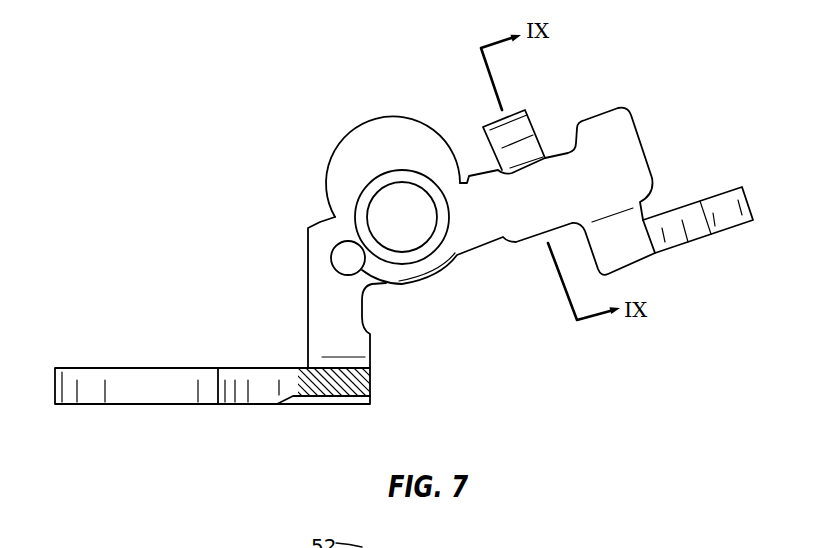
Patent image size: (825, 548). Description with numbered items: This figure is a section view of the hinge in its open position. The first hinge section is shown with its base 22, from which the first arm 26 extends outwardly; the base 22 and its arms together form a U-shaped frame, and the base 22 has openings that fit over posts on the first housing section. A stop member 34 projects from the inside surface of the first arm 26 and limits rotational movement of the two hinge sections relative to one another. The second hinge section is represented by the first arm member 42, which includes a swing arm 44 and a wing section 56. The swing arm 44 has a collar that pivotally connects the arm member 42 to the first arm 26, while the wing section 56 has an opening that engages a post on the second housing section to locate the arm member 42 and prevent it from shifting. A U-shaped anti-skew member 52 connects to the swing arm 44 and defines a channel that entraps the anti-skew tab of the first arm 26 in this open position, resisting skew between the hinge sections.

The base 22 is at (150, 405).
The first arm 26 is at (327, 310).
The stop member 34 is at (339, 243).
The first arm member 42 is at (527, 84).
The swing arm 44 is at (520, 213).
The U-shaped anti-skew member 52 is at (492, 122).
The wing section 56 is at (730, 232).